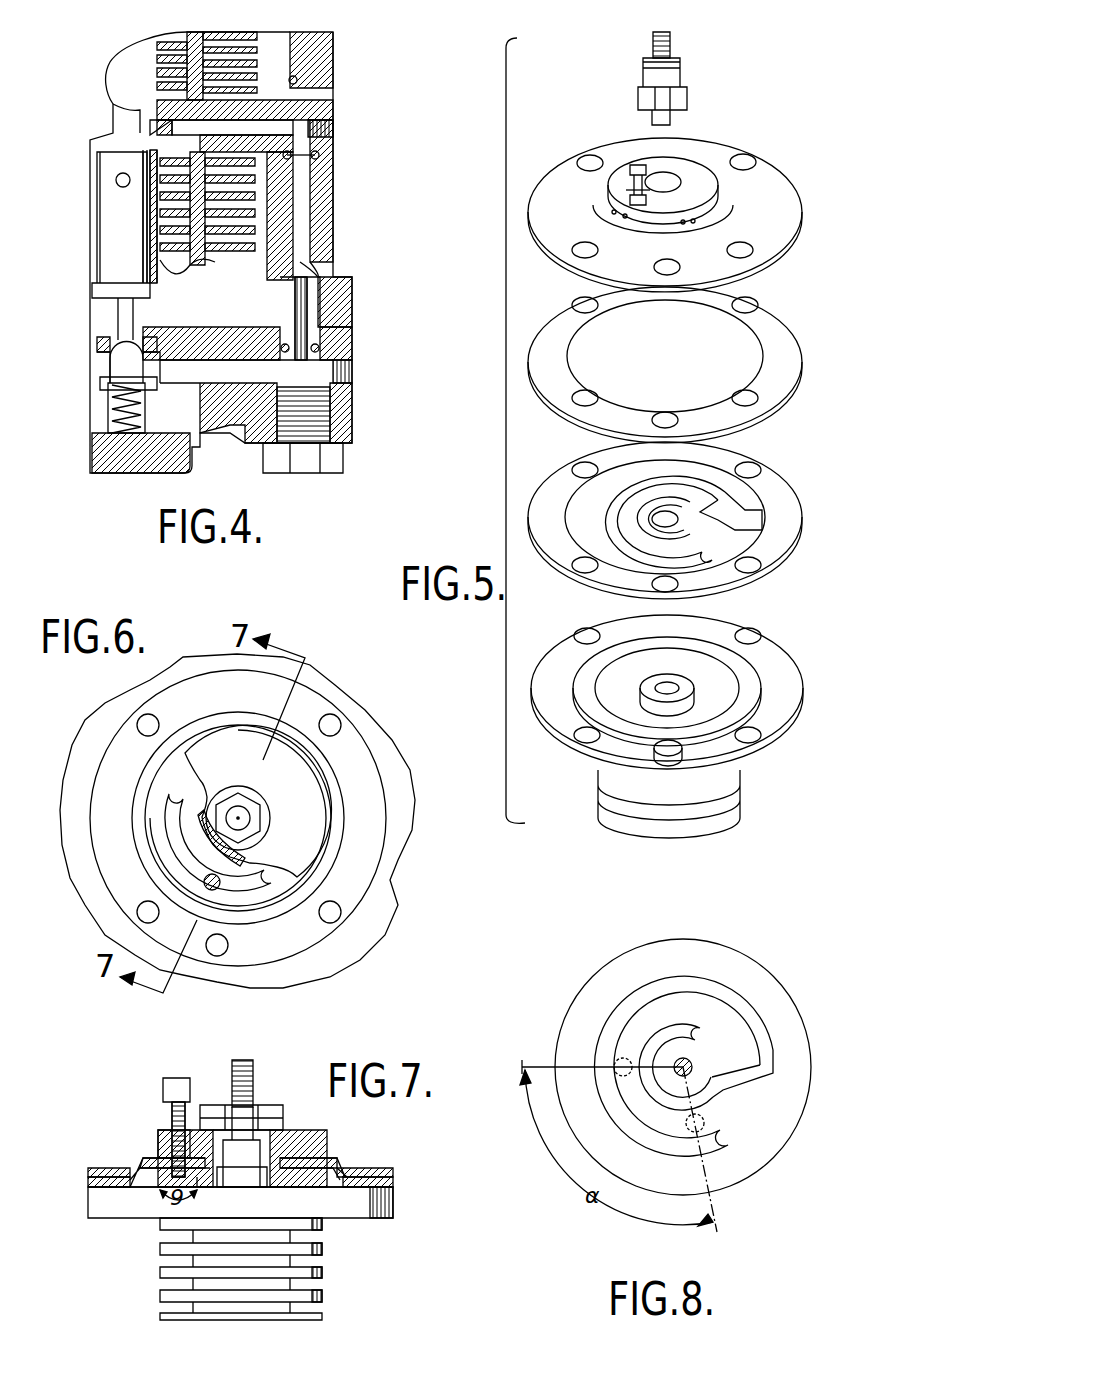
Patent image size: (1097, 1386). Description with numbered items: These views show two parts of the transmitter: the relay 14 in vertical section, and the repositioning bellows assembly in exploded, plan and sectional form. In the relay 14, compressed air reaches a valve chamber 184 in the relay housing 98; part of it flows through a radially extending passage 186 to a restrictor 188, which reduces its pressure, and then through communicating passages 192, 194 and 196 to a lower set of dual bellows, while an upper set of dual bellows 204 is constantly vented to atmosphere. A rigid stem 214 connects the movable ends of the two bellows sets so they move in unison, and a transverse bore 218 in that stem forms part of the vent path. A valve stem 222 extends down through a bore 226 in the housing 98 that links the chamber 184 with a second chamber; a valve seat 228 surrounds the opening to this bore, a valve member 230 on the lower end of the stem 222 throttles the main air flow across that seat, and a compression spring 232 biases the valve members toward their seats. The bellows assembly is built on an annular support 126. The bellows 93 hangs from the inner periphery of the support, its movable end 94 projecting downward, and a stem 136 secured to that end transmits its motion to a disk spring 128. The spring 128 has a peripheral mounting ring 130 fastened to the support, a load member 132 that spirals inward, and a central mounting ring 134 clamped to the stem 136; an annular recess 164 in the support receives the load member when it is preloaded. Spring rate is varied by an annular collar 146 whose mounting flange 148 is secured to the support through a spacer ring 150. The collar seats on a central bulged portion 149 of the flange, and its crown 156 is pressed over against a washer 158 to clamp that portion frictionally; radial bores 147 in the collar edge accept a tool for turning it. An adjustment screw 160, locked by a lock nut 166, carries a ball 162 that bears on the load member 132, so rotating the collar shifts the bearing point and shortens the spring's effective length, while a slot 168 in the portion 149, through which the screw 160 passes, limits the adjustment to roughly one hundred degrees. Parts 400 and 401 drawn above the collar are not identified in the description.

In FIG. 4, the relay 14 is at (340, 55).
In FIG. 5, the bellows 93 is at (700, 797).
In FIG. 7, the bellows 93 is at (320, 1270).
In FIG. 5, the movable end 94 is at (673, 813).
In FIG. 7, the movable end 94 is at (167, 1317).
In FIG. 4, the relay housing 98 is at (333, 78).
In FIG. 5, the annular support 126 is at (772, 723).
In FIG. 7, the annular support 126 is at (393, 1212).
In FIG. 5, the disk spring 128 is at (800, 490).
In FIG. 7, the disk spring 128 is at (250, 1192).
In FIG. 8, the disk spring 128 is at (810, 1090).
In FIG. 5, the peripheral mounting ring 130 is at (557, 483).
In FIG. 7, the peripheral mounting ring 130 is at (92, 1185).
In FIG. 8, the peripheral mounting ring 130 is at (770, 987).
In FIG. 5, the load member 132 is at (750, 510).
In FIG. 8, the load member 132 is at (635, 1013).
In FIG. 5, the central mounting ring 134 is at (673, 510).
In FIG. 8, the central mounting ring 134 is at (660, 1047).
In FIG. 5, the stem 136 is at (685, 688).
In FIG. 5, the annular collar 146 is at (700, 177).
In FIG. 6, the annular collar 146 is at (310, 823).
In FIG. 7, the annular collar 146 is at (297, 1137).
In FIG. 5, the radial bores 147 is at (607, 213).
In FIG. 5, the mounting flange 148 is at (777, 243).
In FIG. 6, the mounting flange 148 is at (363, 877).
In FIG. 7, the mounting flange 148 is at (98, 1170).
In FIG. 5, the central bulged portion 149 is at (733, 203).
In FIG. 6, the central bulged portion 149 is at (320, 773).
In FIG. 7, the central bulged portion 149 is at (147, 1157).
In FIG. 5, the spacer ring 150 is at (783, 335).
In FIG. 7, the spacer ring 150 is at (397, 1178).
In FIG. 5, the crown 156 is at (668, 753).
In FIG. 7, the crown 156 is at (205, 1177).
In FIG. 7, the washer 158 is at (340, 1170).
In FIG. 5, the adjustment screw 160 is at (638, 165).
In FIG. 6, the adjustment screw 160 is at (220, 888).
In FIG. 7, the adjustment screw 160 is at (167, 1085).
In FIG. 7, the ball 162 is at (153, 1182).
In FIG. 5, the annular recess 164 is at (750, 700).
In FIG. 5, the lock nut 166 is at (610, 190).
In FIG. 7, the lock nut 166 is at (160, 1127).
In FIG. 6, the slot 168 is at (172, 843).
In FIG. 4, the chamber 184 is at (100, 377).
In FIG. 4, the radially extending passage 186 is at (227, 377).
In FIG. 4, the restrictor 188 is at (320, 337).
In FIG. 4, the passage 192 is at (333, 267).
In FIG. 4, the passage 194 is at (283, 117).
In FIG. 4, the passage 196 is at (200, 140).
In FIG. 4, the dual bellows 204 is at (253, 43).
In FIG. 4, the rigid stem 214 is at (107, 220).
In FIG. 4, the transverse bore 218 is at (116, 180).
In FIG. 4, the valve stem 222 is at (118, 313).
In FIG. 4, the bore 226 is at (110, 340).
In FIG. 4, the valve seat 228 is at (100, 367).
In FIG. 4, the valve member 230 is at (127, 373).
In FIG. 4, the compression spring 232 is at (113, 473).
In FIG. 7, the stud 400 is at (213, 1108).
In FIG. 7, the nuts 401 is at (247, 1123).